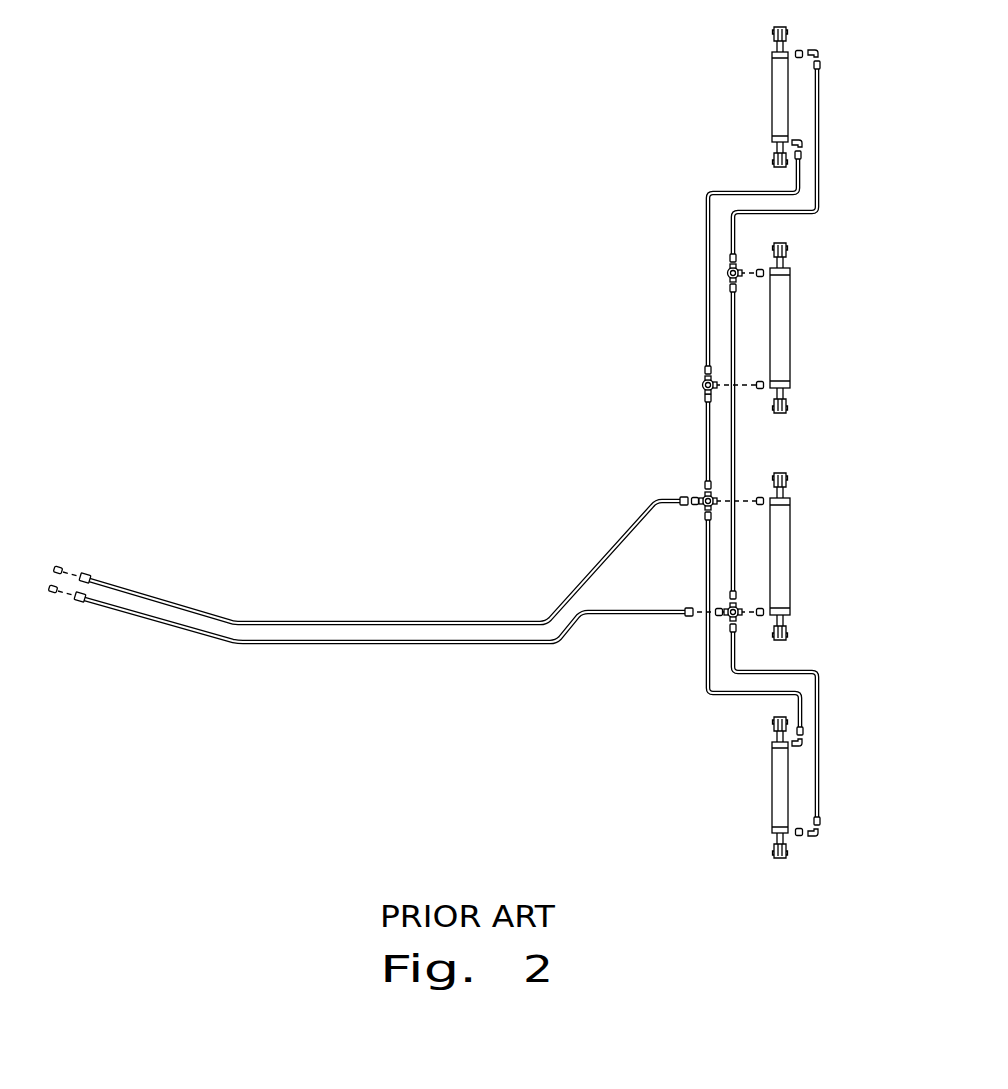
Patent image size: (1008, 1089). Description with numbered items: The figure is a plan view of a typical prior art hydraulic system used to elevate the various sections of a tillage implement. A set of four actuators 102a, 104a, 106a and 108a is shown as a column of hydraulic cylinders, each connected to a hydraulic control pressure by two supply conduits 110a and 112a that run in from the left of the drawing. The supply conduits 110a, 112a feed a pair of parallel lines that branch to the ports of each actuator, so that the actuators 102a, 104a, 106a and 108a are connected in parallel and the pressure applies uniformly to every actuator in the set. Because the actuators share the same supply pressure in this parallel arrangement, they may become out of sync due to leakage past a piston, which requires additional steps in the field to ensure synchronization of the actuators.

The actuator 102a is at (775, 102).
The actuator 104a is at (786, 307).
The actuator 106a is at (787, 547).
The actuator 108a is at (775, 802).
The supply conduit 110a is at (118, 585).
The supply conduit 112a is at (157, 621).